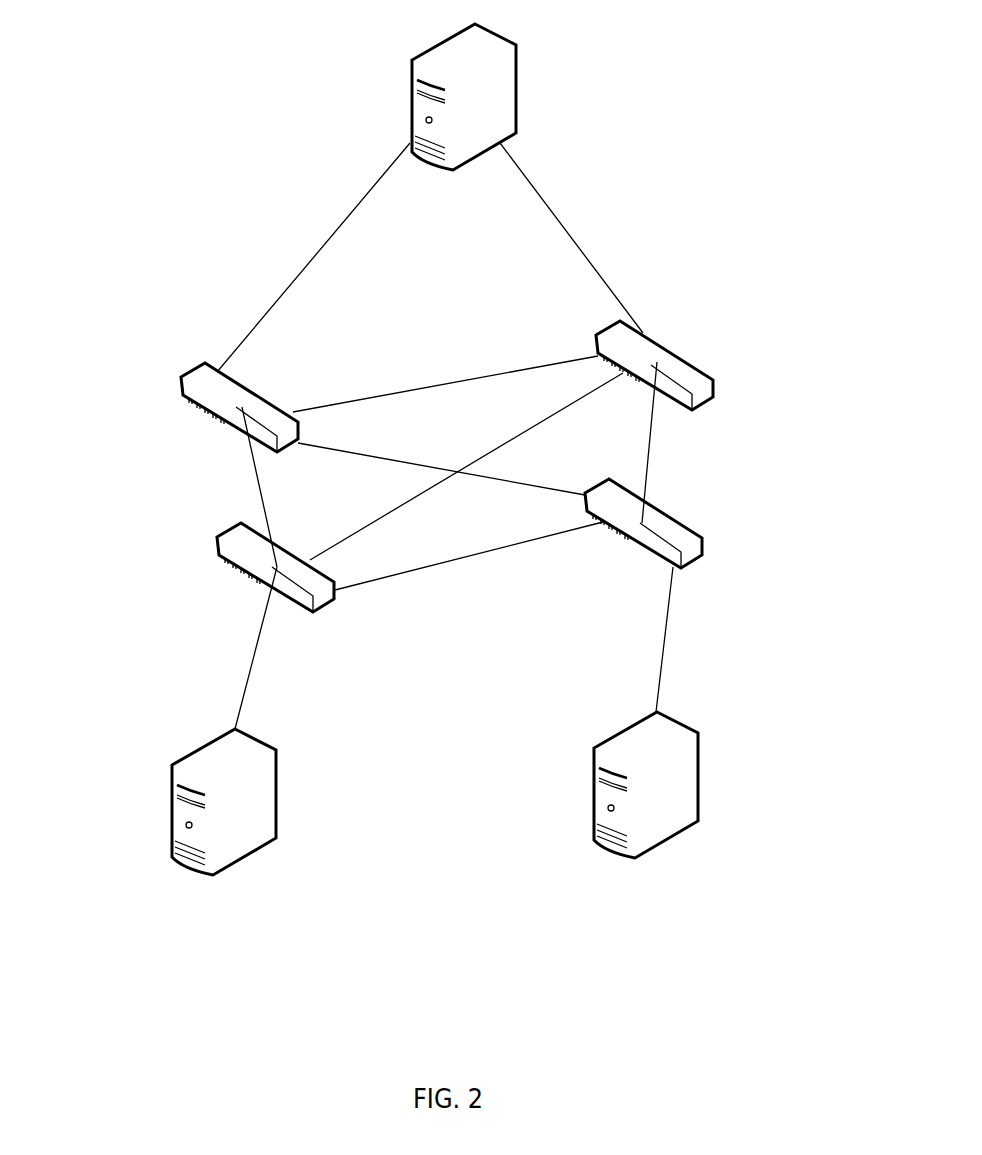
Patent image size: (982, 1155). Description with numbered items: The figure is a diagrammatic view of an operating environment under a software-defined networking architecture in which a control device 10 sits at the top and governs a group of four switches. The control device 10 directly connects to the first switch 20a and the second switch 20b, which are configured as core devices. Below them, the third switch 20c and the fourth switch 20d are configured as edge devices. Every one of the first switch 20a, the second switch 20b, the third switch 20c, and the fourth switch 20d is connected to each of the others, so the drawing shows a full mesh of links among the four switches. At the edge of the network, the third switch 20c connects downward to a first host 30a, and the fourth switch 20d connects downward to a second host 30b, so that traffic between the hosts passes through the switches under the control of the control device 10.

The control device 10 is at (517, 58).
The first switch 20a is at (266, 398).
The second switch 20b is at (680, 353).
The third switch 20c is at (226, 530).
The fourth switch 20d is at (673, 513).
The first host 30a is at (275, 751).
The second host 30b is at (696, 732).